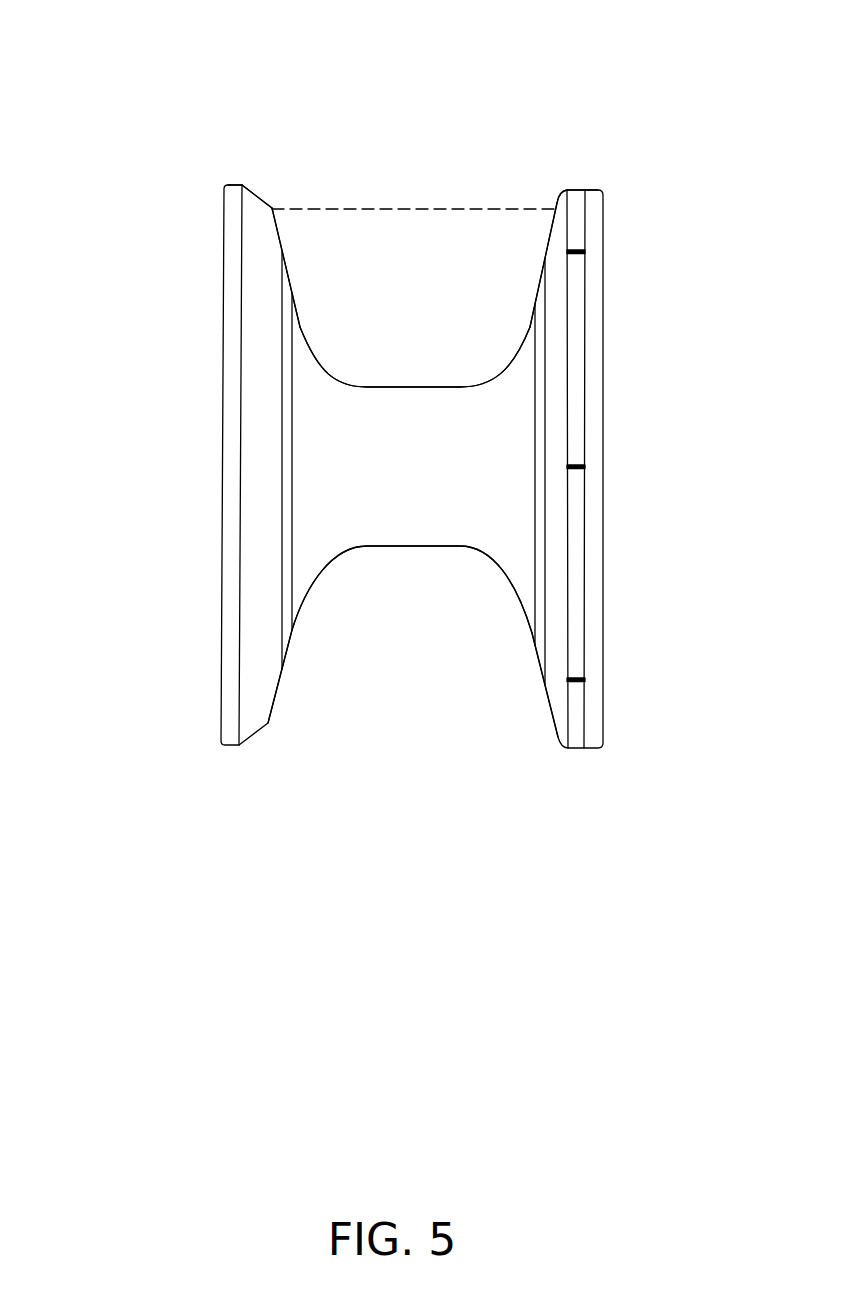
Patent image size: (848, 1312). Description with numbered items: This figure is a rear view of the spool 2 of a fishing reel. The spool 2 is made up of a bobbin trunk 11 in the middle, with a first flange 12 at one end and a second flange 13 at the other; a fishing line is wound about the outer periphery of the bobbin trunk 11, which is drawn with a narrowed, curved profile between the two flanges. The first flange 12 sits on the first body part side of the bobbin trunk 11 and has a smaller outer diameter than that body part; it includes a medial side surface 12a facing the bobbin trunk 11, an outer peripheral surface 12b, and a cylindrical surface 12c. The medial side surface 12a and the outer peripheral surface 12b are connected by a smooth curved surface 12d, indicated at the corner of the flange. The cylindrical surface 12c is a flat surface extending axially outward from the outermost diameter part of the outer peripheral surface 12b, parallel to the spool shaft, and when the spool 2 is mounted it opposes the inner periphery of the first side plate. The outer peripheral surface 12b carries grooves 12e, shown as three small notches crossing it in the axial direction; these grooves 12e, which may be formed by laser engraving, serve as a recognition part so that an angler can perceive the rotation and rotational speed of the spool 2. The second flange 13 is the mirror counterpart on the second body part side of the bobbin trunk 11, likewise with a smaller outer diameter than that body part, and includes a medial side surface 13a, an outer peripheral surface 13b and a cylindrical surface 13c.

The spool 2 is at (212, 137).
The bobbin trunk 11 is at (413, 548).
The first flange 12 is at (532, 770).
The medial side surface 12a is at (558, 198).
The outer peripheral surface 12b is at (577, 188).
The cylindrical surface 12c is at (592, 188).
The smooth curved surface 12d is at (562, 190).
The groove 12e is at (585, 256).
The second flange 13 is at (277, 760).
The medial side surface 13a is at (272, 207).
The outer peripheral surface 13b is at (256, 197).
The cylindrical surface 13c is at (240, 187).